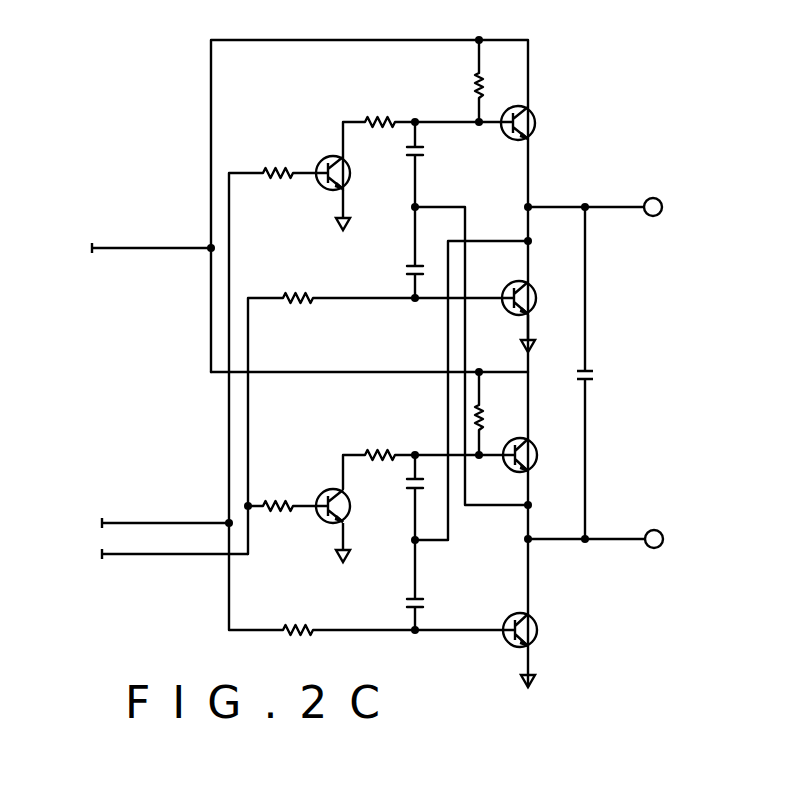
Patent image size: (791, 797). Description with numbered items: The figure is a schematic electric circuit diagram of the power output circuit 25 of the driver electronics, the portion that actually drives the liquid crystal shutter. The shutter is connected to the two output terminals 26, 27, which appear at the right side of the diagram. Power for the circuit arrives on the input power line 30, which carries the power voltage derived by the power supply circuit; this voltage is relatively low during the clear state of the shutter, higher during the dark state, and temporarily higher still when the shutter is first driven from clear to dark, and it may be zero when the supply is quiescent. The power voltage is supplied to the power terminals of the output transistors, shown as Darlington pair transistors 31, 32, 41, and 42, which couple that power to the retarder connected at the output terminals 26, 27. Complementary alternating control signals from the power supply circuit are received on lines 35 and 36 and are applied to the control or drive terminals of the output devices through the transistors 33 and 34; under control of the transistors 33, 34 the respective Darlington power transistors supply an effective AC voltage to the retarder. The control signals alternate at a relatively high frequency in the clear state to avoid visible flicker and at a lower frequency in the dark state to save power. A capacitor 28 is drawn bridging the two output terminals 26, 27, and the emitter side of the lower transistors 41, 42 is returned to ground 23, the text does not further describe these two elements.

The ground 23 is at (537, 680).
The power output circuit 25 is at (597, 152).
The output terminal 26 is at (661, 198).
The output terminal 27 is at (651, 530).
The capacitor 28 is at (593, 370).
The input power line 30 is at (174, 247).
The Darlington pair transistor 31 is at (537, 130).
The Darlington pair transistor 32 is at (540, 455).
The transistor 33 is at (331, 157).
The transistor 34 is at (328, 490).
The line 35 is at (167, 522).
The line 36 is at (208, 557).
The Darlington pair transistor 41 is at (538, 298).
The Darlington pair transistor 42 is at (538, 628).